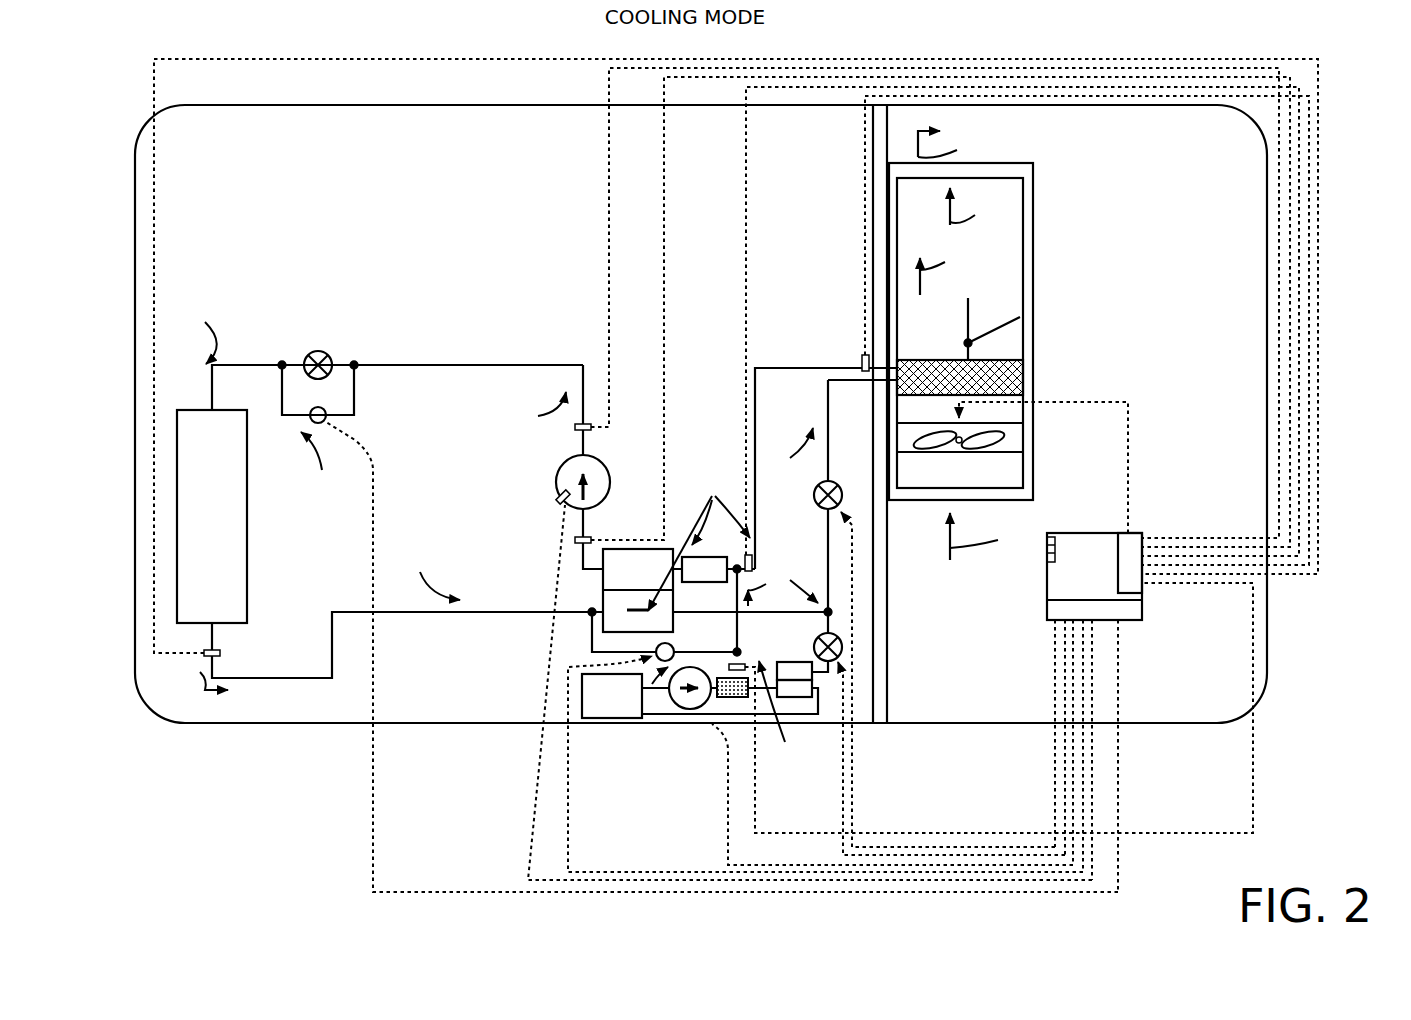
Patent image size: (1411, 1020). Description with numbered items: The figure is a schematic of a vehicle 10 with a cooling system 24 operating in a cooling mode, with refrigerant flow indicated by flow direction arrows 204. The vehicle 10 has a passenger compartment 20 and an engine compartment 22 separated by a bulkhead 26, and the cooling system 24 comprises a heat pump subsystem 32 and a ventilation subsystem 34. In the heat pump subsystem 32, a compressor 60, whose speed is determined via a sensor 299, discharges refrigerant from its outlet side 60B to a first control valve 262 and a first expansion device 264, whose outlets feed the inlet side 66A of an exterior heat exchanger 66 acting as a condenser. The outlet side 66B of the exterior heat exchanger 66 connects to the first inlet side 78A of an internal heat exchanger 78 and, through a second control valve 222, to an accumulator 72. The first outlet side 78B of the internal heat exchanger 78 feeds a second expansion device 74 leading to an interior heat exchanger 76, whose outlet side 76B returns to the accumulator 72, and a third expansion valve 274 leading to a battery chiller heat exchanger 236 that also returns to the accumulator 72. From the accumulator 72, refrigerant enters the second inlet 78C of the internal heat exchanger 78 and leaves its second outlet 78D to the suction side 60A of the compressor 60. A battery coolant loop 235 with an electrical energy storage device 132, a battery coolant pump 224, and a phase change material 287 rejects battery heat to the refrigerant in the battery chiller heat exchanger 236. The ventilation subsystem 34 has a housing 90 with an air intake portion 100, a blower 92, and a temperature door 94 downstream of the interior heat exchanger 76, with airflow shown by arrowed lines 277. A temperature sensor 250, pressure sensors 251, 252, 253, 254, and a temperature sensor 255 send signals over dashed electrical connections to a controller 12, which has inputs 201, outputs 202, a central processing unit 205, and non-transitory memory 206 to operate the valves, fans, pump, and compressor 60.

The vehicle 10 is at (145, 120).
The controller 12 is at (1094, 712).
The passenger compartment 20 is at (1169, 317).
The engine compartment 22 is at (194, 190).
The cooling system 24 is at (338, 122).
The bulkhead 26 is at (890, 652).
The heat pump subsystem 32 is at (270, 298).
The ventilation subsystem 34 is at (1040, 184).
The compressor 60 is at (556, 483).
The inlet or suction side of compressor 60A is at (598, 504).
The outlet side of compressor 60B is at (598, 463).
The exterior heat exchanger 66 is at (198, 532).
The inlet side of exterior heat exchanger 66A is at (213, 408).
The outlet side of exterior heat exchanger 66B is at (214, 628).
The accumulator 72 is at (714, 570).
The second expansion device 74 is at (818, 507).
The interior heat exchanger 76 is at (1024, 376).
The outlet side of interior heat exchanger 76B is at (860, 369).
The internal heat exchanger 78 is at (624, 582).
The first inlet side of internal heat exchanger 78A is at (600, 611).
The first outlet side of internal heat exchanger 78B is at (676, 612).
The second inlet of internal heat exchanger 78C is at (673, 552).
The second outlet of internal heat exchanger 78D is at (603, 578).
The housing 90 is at (1033, 488).
The blower 92 is at (1025, 440).
The temperature door 94 is at (1005, 320).
The air intake portion 100 is at (937, 482).
The electrical energy storage device 132 is at (700, 696).
The inputs 201 is at (1135, 541).
The outputs 202 is at (1125, 611).
The flow direction arrows 204 is at (486, 532).
The central processing unit 205 is at (1047, 562).
The non-transitory memory 206 is at (660, 708).
The second control valve 222 is at (656, 650).
The battery coolant pump 224 is at (686, 710).
The battery coolant loop 235 is at (700, 724).
The battery chiller heat exchanger 236 is at (800, 662).
The temperature sensor 250 is at (221, 654).
The pressure sensor 251 is at (575, 430).
The pressure sensor 252 is at (575, 540).
The pressure sensor 253 is at (733, 664).
The pressure sensor 254 is at (751, 556).
The temperature sensor 255 is at (863, 358).
The first control valve 262 is at (328, 419).
The first expansion device 264 is at (316, 378).
The third expansion valve 274 is at (841, 640).
The arrowed lines 277 is at (974, 339).
The phase change material 287 is at (742, 700).
The sensor 299 is at (559, 500).